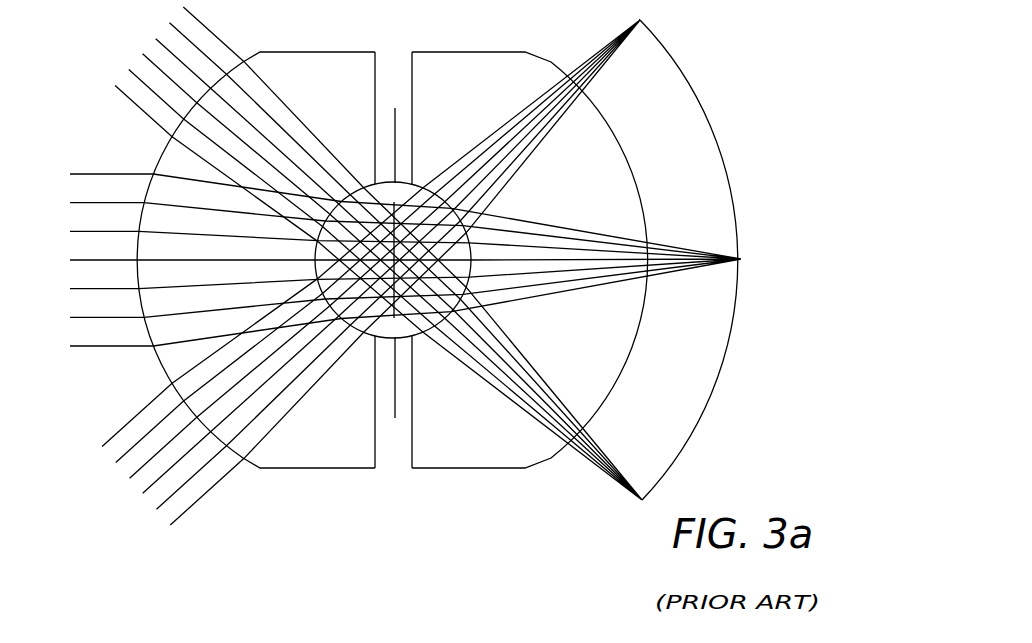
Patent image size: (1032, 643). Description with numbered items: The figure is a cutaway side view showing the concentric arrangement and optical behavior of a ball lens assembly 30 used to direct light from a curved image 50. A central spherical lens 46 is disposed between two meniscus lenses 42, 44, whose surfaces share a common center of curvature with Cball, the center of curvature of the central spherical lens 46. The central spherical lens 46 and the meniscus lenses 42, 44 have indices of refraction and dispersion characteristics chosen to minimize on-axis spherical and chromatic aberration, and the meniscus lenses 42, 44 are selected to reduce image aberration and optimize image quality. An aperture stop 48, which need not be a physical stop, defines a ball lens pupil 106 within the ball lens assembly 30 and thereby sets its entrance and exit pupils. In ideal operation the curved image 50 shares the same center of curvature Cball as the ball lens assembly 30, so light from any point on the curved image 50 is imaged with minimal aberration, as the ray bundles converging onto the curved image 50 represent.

The ball lens assembly 30 is at (320, 518).
The meniscus lens 42 is at (463, 52).
The meniscus lens 44 is at (332, 52).
The central spherical lens 46 is at (405, 337).
The aperture stop 48 is at (396, 132).
The curved image 50 is at (640, 20).
The ball lens pupil 106 is at (382, 203).
The center of curvature of central spherical lens Cball is at (465, 218).